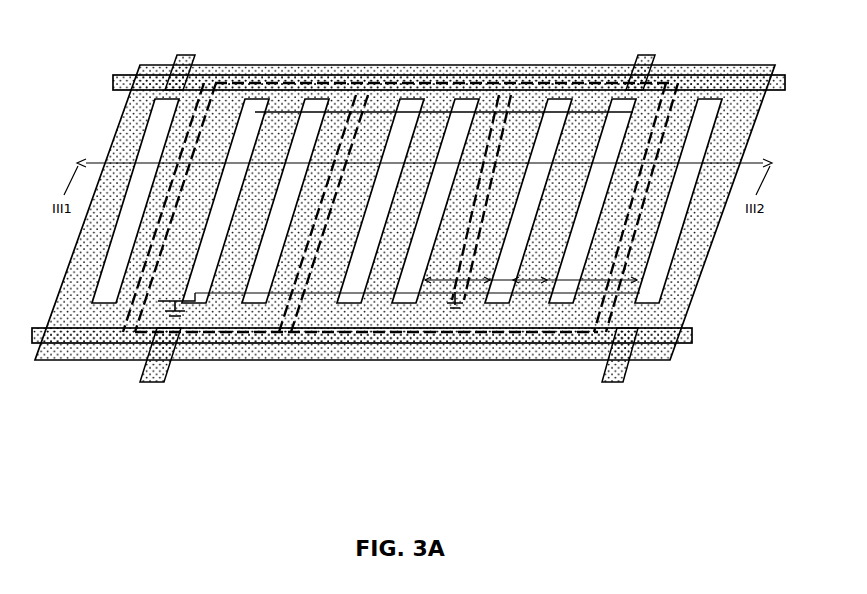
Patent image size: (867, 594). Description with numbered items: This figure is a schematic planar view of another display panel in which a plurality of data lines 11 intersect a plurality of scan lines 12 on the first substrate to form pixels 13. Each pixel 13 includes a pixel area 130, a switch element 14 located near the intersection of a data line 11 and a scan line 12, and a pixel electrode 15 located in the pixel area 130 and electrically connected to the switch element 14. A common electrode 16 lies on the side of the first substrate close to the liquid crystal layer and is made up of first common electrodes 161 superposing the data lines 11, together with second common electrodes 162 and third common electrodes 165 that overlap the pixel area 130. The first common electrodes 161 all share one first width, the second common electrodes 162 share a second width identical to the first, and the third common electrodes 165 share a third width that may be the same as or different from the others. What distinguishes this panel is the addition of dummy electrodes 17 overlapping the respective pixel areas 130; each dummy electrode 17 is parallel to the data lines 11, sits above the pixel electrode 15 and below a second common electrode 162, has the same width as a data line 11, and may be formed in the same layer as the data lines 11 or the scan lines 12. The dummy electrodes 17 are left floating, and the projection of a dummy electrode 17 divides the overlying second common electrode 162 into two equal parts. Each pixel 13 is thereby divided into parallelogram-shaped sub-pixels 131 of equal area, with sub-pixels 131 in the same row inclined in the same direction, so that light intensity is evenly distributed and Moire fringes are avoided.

The data line 11 is at (127, 345).
The scan line 12 is at (84, 340).
The pixel 13 is at (360, 332).
The pixel area 130 is at (310, 332).
The sub-pixel 131 is at (440, 104).
The switch element 14 is at (177, 343).
The pixel electrode 15 is at (240, 332).
The common electrode 16 is at (551, 269).
The first common electrode 161 is at (636, 246).
The second common electrode 162 is at (458, 288).
The third common electrode 165 is at (535, 284).
The dummy electrode 17 is at (354, 106).